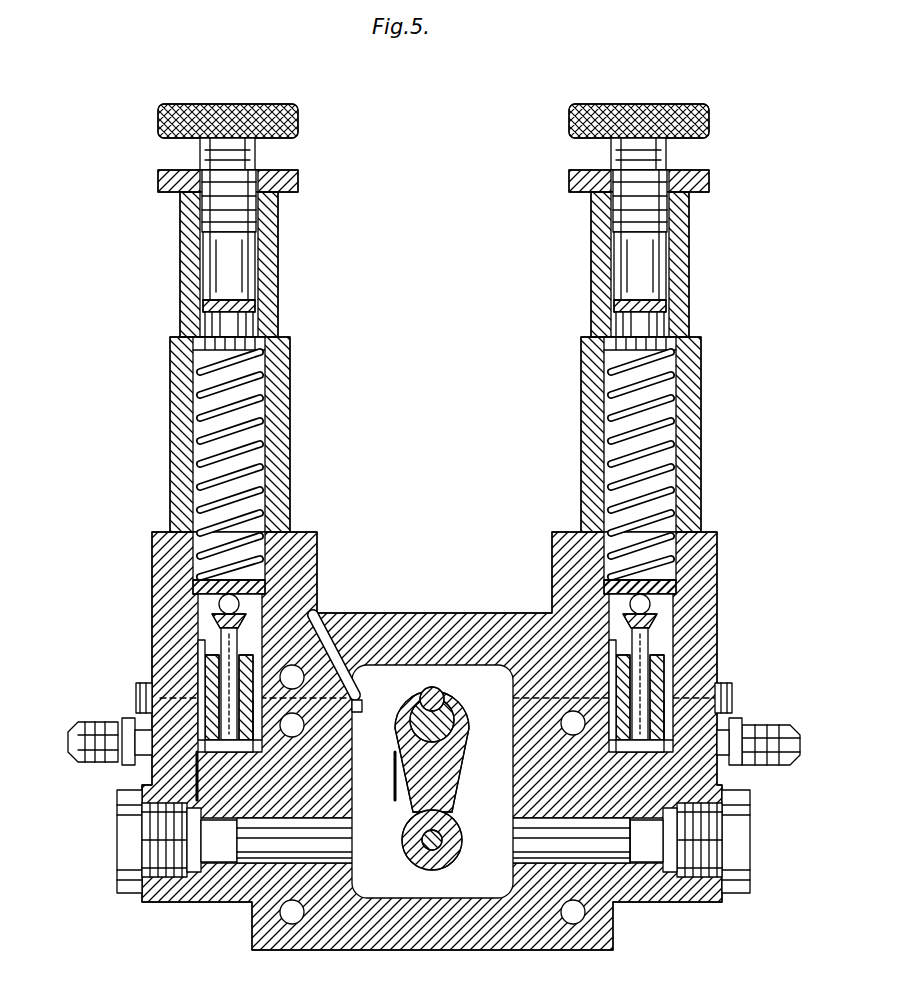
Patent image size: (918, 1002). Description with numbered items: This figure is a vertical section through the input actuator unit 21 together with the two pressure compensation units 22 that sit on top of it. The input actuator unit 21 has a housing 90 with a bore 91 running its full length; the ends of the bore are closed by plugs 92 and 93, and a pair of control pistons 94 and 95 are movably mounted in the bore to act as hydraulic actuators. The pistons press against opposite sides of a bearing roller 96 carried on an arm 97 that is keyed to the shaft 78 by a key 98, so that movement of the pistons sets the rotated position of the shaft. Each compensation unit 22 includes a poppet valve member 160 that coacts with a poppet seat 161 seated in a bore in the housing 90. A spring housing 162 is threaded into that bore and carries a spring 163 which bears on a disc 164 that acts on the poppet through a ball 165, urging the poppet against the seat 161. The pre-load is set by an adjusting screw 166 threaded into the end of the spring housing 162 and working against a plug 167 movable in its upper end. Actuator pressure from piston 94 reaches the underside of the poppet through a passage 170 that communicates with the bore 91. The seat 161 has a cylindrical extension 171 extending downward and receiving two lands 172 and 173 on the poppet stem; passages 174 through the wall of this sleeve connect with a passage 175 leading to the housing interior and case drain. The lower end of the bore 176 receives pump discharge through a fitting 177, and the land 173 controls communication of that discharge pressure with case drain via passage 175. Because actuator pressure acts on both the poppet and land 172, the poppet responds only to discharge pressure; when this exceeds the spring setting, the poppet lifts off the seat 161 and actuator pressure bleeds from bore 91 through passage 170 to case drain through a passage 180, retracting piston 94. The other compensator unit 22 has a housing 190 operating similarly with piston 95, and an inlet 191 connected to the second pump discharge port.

The input actuator unit 21 is at (230, 937).
The pressure compensation unit 22 is at (316, 436).
The shaft 78 is at (470, 713).
The housing 90 is at (537, 945).
The bore 91 is at (643, 868).
The plug 92 is at (118, 887).
The plug 93 is at (732, 884).
The control piston 94 is at (373, 830).
The control piston 95 is at (488, 856).
The bearing roller 96 is at (421, 870).
The arm 97 is at (443, 767).
The key 98 is at (428, 697).
The poppet valve member 160 is at (225, 639).
The poppet seat 161 is at (228, 623).
The spring housing 162 is at (283, 359).
The spring 163 is at (207, 446).
The disc 164 is at (254, 580).
The ball 165 is at (218, 612).
The adjusting screw 166 is at (232, 207).
The plug 167 is at (250, 267).
The passage 170 is at (195, 780).
The cylindrical extension 171 is at (241, 746).
The land 172 is at (210, 681).
The land 173 is at (256, 702).
The passages 174 is at (203, 685).
The passage 175 is at (356, 740).
The bore 176 is at (229, 750).
The fitting 177 is at (108, 760).
The passage 180 is at (318, 613).
The housing 190 is at (668, 434).
The inlet 191 is at (774, 726).